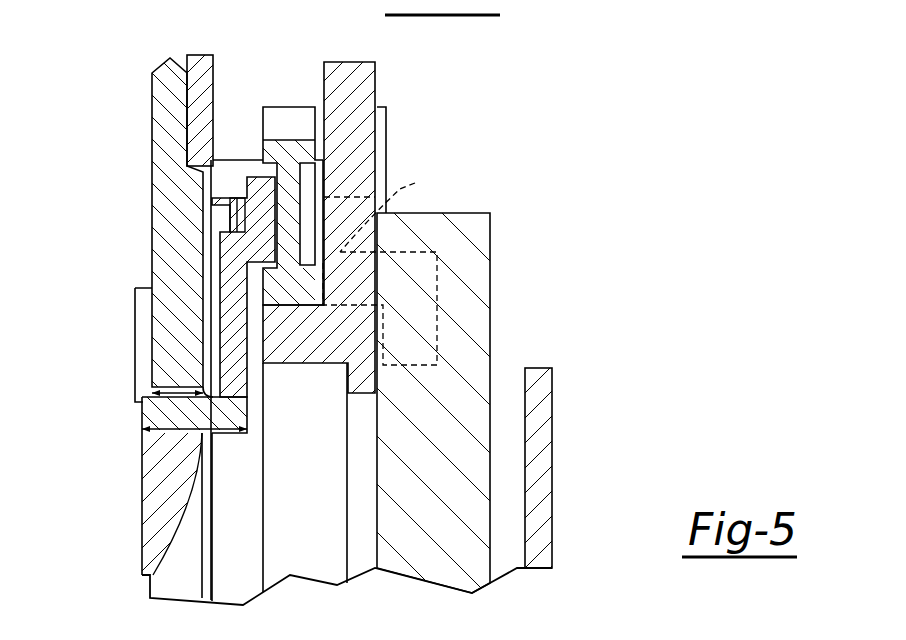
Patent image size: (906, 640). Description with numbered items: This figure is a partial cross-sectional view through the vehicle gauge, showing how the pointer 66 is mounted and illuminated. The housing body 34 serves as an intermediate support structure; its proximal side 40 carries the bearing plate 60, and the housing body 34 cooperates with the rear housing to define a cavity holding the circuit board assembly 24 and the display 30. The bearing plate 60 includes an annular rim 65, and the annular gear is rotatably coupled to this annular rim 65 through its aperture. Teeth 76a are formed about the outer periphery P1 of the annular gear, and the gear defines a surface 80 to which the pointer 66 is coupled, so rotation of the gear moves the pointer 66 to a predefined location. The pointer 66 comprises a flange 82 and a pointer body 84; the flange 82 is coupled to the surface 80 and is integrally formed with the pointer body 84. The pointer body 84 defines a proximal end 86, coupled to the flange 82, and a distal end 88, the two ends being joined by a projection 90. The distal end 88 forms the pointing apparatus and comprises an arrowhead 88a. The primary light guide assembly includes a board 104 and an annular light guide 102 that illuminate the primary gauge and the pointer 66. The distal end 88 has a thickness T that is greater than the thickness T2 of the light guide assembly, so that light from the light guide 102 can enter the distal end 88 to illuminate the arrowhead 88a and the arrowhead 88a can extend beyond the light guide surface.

The circuit board assembly 24 is at (539, 358).
The display 30 is at (458, 203).
The housing body 34 is at (395, 145).
The proximal side 40 is at (380, 266).
The bearing plate 60 is at (344, 56).
The annular rim 65 is at (310, 363).
The pointer 66 is at (126, 571).
The teeth 76a is at (302, 107).
The surface 80 is at (267, 165).
The flange 82 is at (247, 190).
The pointer body 84 is at (133, 449).
The proximal end 86 is at (255, 220).
The distal end 88 is at (150, 482).
The arrowhead 88a is at (138, 533).
The projection 90 is at (230, 295).
The light guide 102 is at (150, 118).
The board 104 is at (203, 58).
The outer periphery P1 is at (277, 140).
The thickness T is at (190, 433).
The thickness T2 is at (173, 390).